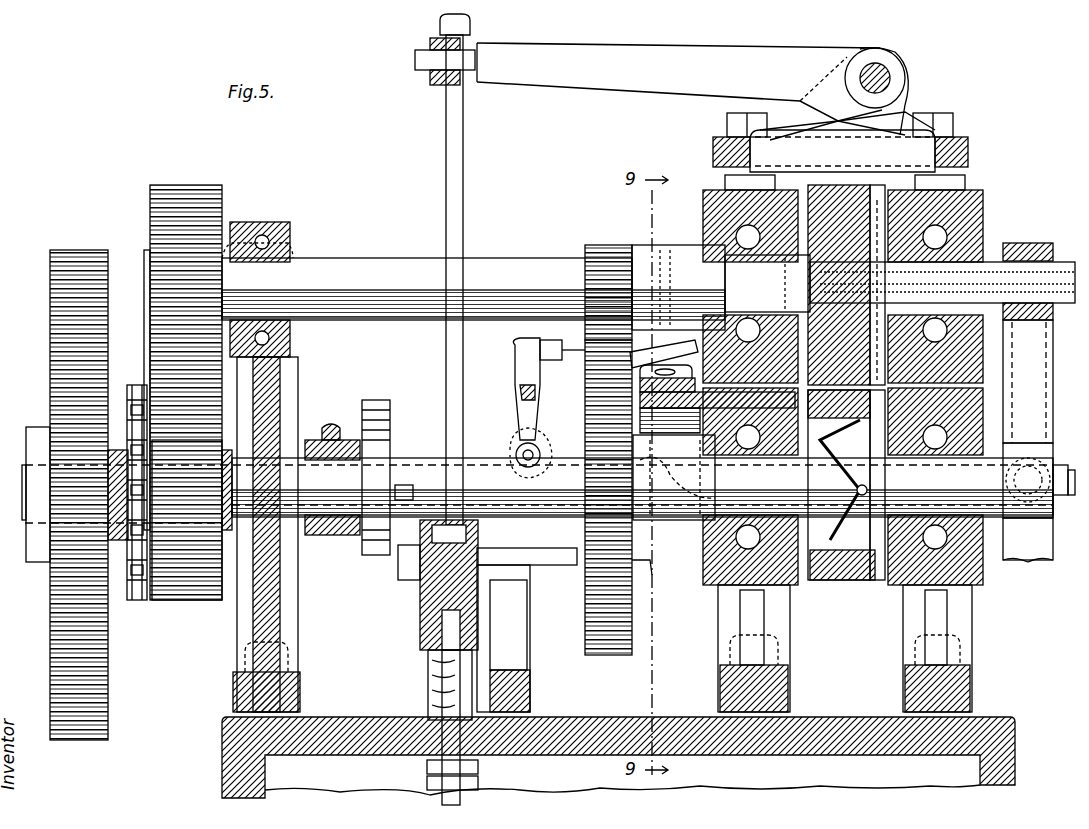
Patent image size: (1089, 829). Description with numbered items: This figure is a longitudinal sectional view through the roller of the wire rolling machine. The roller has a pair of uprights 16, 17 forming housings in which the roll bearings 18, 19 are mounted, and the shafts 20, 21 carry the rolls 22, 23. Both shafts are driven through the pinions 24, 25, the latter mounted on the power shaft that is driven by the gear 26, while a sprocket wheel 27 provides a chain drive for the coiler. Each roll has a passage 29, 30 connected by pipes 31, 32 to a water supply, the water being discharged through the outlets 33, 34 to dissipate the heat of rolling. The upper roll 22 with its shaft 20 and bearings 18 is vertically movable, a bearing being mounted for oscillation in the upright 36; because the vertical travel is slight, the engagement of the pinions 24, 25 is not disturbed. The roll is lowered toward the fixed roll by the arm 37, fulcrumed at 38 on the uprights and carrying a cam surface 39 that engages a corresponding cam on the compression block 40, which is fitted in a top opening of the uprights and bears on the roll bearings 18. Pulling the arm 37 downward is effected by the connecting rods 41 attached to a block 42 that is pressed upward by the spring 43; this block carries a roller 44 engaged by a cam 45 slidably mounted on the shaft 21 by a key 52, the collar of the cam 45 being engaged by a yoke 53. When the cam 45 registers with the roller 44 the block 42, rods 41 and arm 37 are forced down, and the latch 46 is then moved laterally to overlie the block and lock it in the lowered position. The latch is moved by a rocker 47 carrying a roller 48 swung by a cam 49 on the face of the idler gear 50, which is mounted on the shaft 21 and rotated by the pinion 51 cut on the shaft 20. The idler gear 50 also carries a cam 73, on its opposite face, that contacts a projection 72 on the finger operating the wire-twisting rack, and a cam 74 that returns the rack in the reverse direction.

The upright 16 is at (968, 625).
The upright 17 is at (778, 625).
The roll bearing 18 is at (715, 200).
The roll bearing 19 is at (705, 562).
The shaft 20 is at (510, 258).
The shaft 21 is at (478, 458).
The roll 22 is at (840, 151).
The roll 23 is at (850, 582).
The pinion 24 is at (152, 205).
The pinion 25 is at (198, 600).
The gear 26 is at (110, 697).
The sprocket wheel 27 is at (138, 600).
The passage 29 is at (878, 210).
The passage 30 is at (850, 200).
The pipe 31 is at (1052, 305).
The pipe 32 is at (1068, 500).
The outlet 33 is at (292, 248).
The outlet 34 is at (1045, 455).
The upright 36 is at (272, 393).
The arm 37 is at (690, 50).
The fulcrum 38 is at (885, 72).
The cam surface 39 is at (842, 122).
The compression block 40 is at (870, 142).
The connecting rod 41 is at (462, 150).
The block 42 is at (420, 612).
The spring 43 is at (468, 698).
The roller 44 is at (400, 600).
The cam 45 is at (385, 412).
The latch 46 is at (532, 570).
The rocker 47 is at (538, 392).
The roller 48 is at (540, 352).
The cam 49 is at (592, 318).
The idler gear 50 is at (630, 640).
The pinion 51 is at (600, 250).
The key 52 is at (405, 485).
The yoke 53 is at (332, 428).
The projection 72 is at (678, 372).
The cam 73 is at (664, 348).
The cam 74 is at (642, 570).